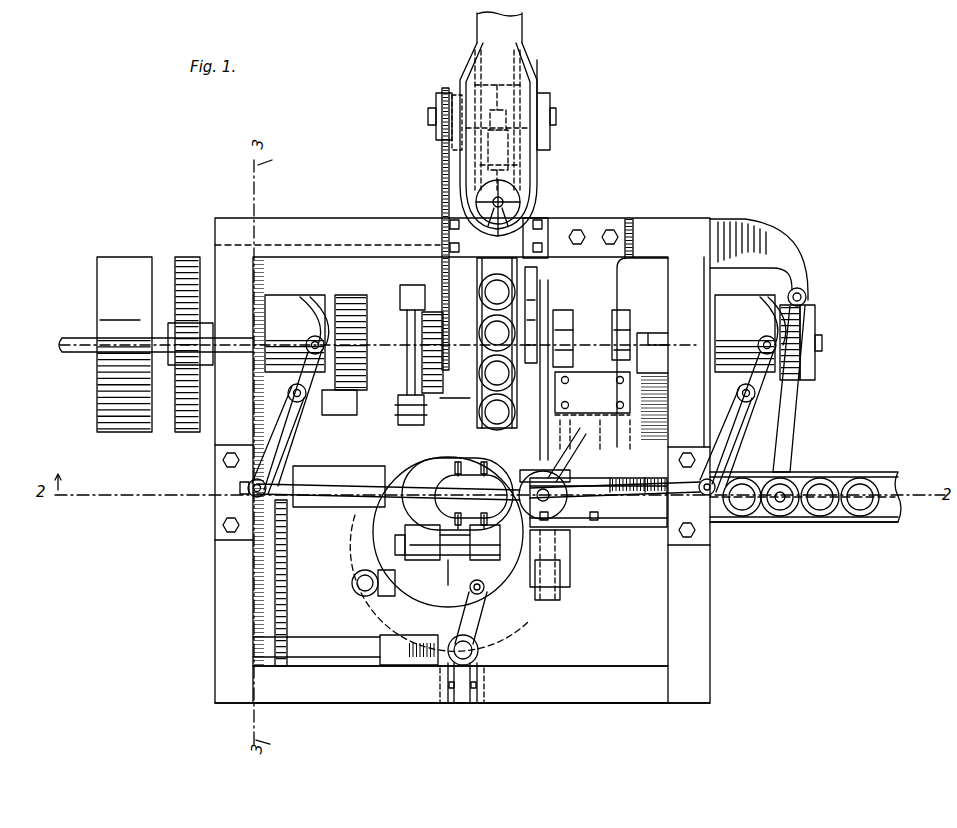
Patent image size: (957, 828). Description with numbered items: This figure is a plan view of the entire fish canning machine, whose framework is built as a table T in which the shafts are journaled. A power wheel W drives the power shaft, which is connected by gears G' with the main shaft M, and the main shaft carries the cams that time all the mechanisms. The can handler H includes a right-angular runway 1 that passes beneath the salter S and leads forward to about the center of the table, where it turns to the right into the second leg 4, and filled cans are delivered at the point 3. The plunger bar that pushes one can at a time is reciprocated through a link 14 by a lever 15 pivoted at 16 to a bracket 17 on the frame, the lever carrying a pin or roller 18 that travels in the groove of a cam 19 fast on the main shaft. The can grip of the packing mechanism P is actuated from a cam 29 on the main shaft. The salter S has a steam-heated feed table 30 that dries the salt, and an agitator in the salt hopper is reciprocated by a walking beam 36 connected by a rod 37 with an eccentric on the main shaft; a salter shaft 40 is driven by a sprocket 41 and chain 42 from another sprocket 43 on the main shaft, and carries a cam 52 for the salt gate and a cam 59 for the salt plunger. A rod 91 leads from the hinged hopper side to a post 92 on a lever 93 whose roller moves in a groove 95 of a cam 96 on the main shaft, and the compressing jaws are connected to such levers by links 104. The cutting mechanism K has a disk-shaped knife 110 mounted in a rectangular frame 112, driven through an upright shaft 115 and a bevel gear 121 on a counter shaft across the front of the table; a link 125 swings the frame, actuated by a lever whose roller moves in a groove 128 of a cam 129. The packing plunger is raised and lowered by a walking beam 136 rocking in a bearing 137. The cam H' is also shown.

The runway or track 1 is at (524, 22).
The feed table 30 is at (512, 70).
The walking beam 36 is at (512, 232).
The rod 37 is at (534, 293).
The salter shaft 40 is at (428, 117).
The sprocket 41 is at (436, 98).
The chain 42 is at (442, 152).
The sprocket 43 is at (443, 343).
The cam 52 is at (455, 95).
The cam 59 is at (550, 138).
The salter S is at (552, 88).
The table T is at (677, 240).
The power wheel W is at (121, 262).
The gears G' is at (190, 333).
The can handler H is at (455, 393).
The cam H' is at (457, 494).
The cutting mechanism or knife K is at (440, 554).
The main shaft M is at (650, 333).
The packing mechanism P is at (568, 525).
The delivery point 3 is at (842, 476).
The second leg 4 is at (730, 516).
The link 14 is at (780, 505).
The lever 15 is at (788, 410).
The pivot 16 is at (806, 296).
The bracket 17 is at (785, 262).
The pin or roller 18 is at (818, 345).
The cam 19 is at (802, 336).
The cam 29 is at (570, 314).
The rod 91 is at (300, 478).
The post 92 is at (248, 484).
The lever 93 is at (272, 440).
The groove 95 is at (318, 304).
The cam 96 is at (288, 298).
The link 104 is at (664, 512).
The disk-shaped knife 110 is at (486, 590).
The rectangular frame 112 is at (470, 614).
The upright shaft 115 is at (479, 650).
The bevel gear 121 is at (445, 703).
The link 125 is at (424, 596).
The groove 128 is at (400, 300).
The cam 129 is at (345, 310).
The walking beam 136 is at (573, 473).
The bearing 137 is at (592, 411).